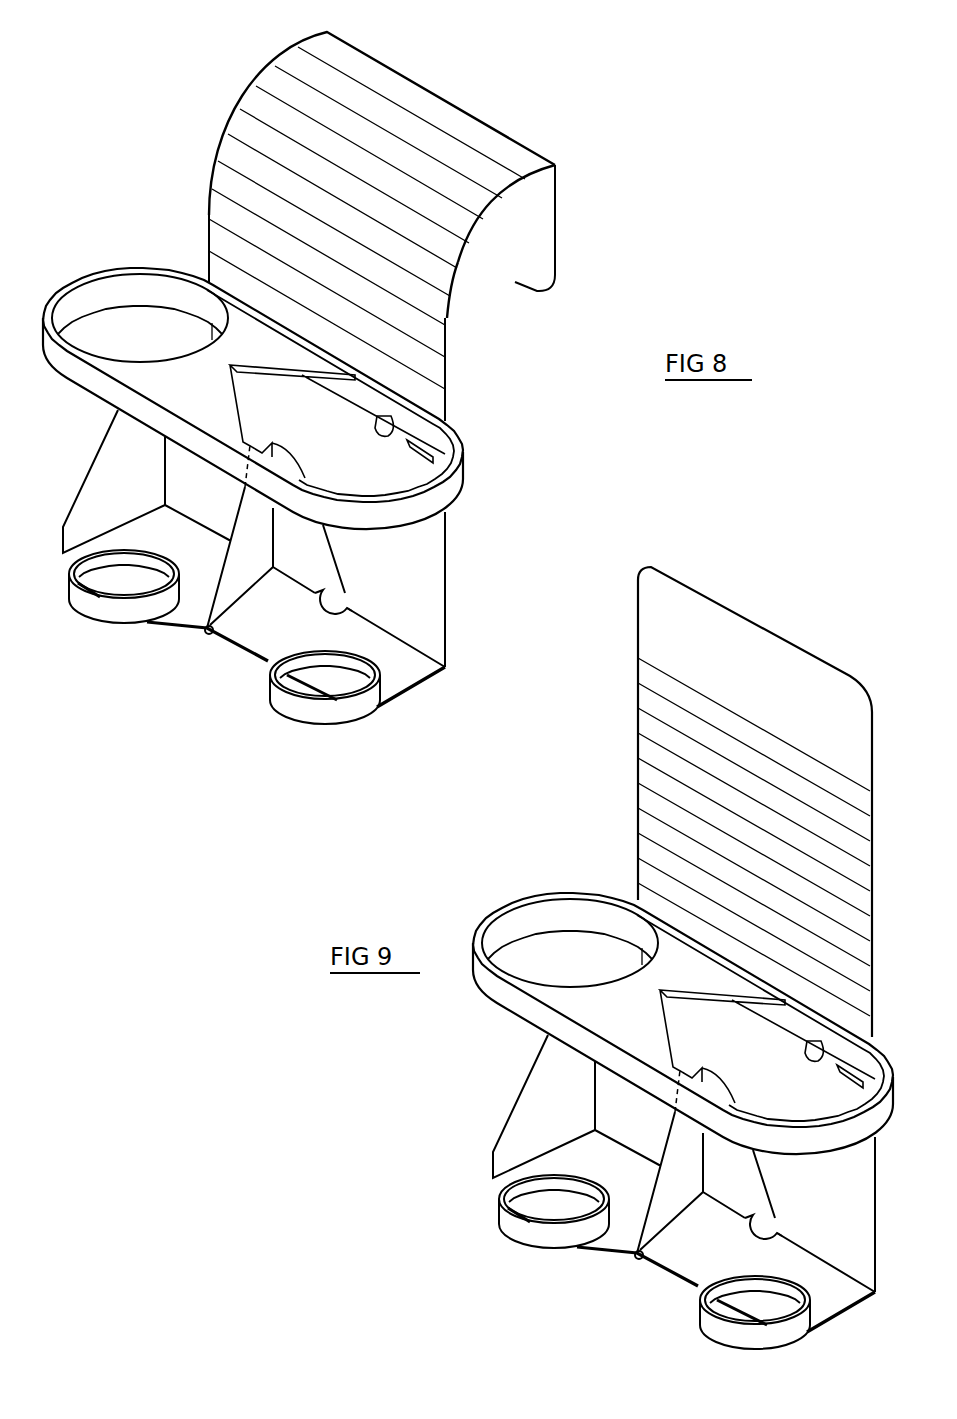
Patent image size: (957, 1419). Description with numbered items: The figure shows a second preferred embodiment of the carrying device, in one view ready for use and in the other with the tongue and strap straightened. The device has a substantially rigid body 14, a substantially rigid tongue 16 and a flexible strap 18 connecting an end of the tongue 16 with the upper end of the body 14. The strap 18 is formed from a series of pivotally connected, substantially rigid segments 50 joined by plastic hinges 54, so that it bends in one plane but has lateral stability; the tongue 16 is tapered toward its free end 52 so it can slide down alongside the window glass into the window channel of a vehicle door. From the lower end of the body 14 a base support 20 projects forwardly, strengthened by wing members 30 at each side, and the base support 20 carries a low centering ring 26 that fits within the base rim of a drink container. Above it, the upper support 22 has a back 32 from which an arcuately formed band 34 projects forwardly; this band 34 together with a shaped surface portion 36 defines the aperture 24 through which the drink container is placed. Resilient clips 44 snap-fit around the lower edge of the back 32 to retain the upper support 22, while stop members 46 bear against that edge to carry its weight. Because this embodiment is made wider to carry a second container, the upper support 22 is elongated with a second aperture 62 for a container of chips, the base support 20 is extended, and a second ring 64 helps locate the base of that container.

The body 14 is at (440, 620).
The tongue 16 is at (558, 200).
The strap 18 is at (217, 167).
The base support 20 is at (250, 625).
The upper support 22 is at (465, 495).
The aperture 24 is at (118, 326).
The ring 26 is at (120, 612).
The wing member 30 is at (115, 463).
The back 32 is at (380, 403).
The band 34 is at (422, 513).
The shaped surface portion 36 is at (160, 388).
The resilient clip 44 is at (393, 426).
The stop member 46 is at (433, 453).
The segments 50 is at (277, 83).
The free end 52 is at (523, 290).
The plastic hinges 54 is at (452, 298).
The second aperture 62 is at (340, 469).
The second ring 64 is at (318, 715).